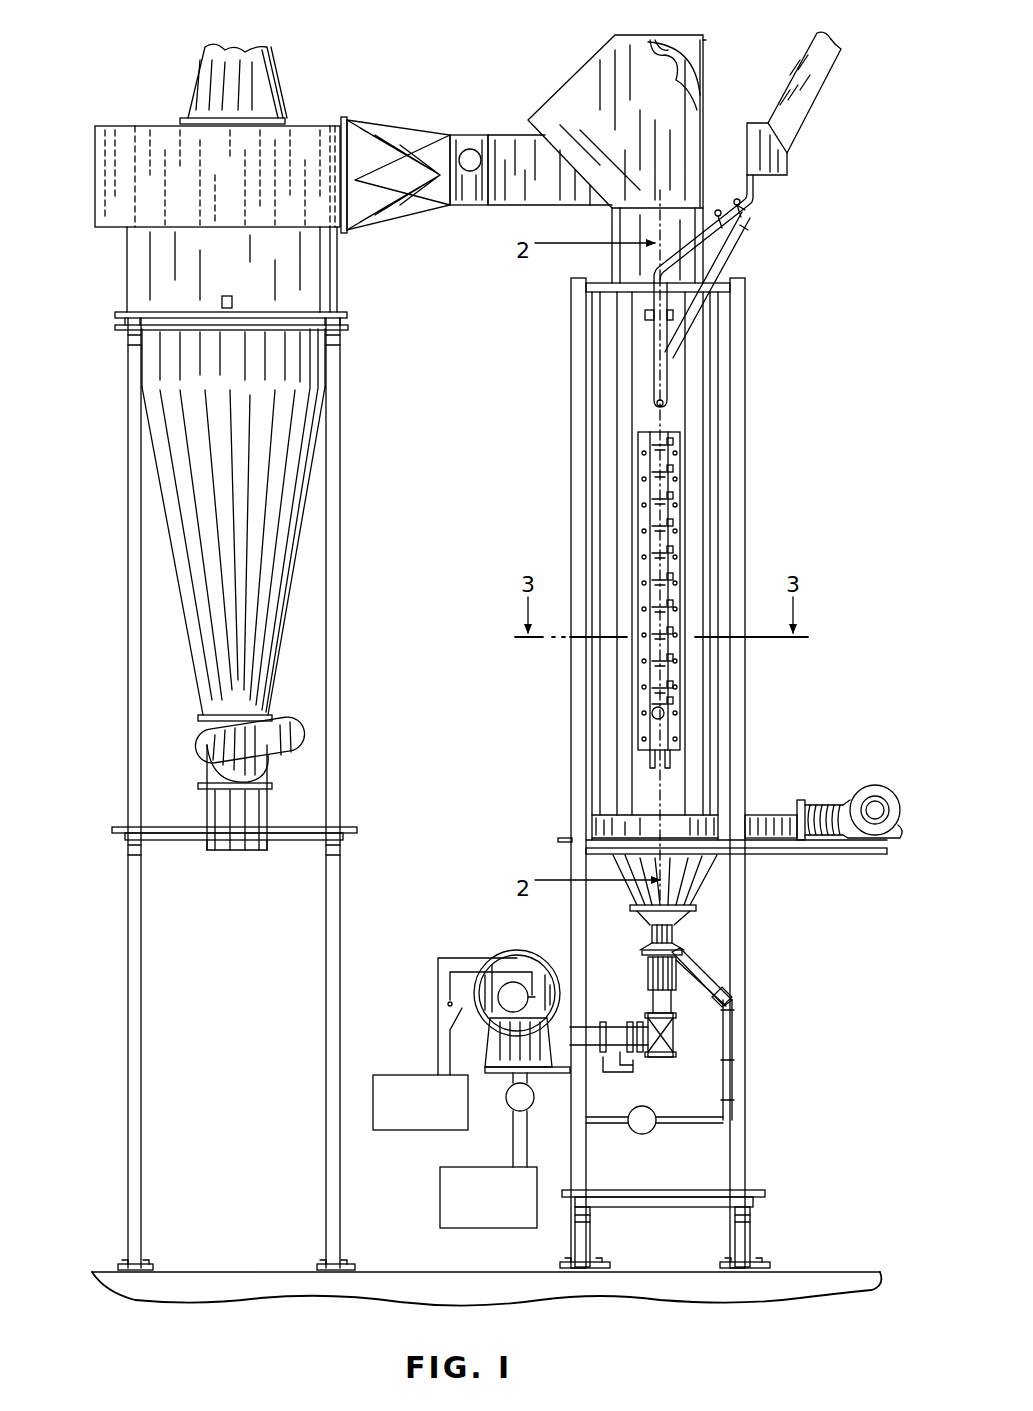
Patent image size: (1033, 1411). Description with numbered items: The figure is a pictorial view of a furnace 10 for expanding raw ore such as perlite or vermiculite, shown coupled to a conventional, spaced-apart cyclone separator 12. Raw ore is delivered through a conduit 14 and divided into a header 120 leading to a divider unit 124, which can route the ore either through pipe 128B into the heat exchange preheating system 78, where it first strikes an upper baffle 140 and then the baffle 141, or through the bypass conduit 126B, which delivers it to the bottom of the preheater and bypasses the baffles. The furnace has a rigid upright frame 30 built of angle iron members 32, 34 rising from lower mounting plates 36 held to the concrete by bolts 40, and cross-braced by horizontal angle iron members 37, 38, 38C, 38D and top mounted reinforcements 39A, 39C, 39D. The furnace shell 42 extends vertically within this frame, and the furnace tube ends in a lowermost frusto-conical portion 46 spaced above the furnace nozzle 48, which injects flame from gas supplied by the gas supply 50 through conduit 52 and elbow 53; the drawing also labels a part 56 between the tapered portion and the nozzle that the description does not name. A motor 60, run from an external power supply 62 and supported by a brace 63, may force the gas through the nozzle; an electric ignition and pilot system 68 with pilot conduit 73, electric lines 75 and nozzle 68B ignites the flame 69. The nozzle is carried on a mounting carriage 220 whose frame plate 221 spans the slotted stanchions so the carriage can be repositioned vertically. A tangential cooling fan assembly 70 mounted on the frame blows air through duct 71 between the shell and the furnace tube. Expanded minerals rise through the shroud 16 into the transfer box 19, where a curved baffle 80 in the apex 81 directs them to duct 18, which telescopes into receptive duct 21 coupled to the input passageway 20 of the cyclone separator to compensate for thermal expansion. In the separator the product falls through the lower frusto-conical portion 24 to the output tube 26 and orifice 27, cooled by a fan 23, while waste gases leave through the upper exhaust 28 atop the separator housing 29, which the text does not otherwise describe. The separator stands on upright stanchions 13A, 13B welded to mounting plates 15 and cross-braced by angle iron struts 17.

The furnace 10 is at (505, 107).
The cyclone separator 12 is at (347, 458).
The stanchion 13A is at (142, 932).
The stanchion 13B is at (341, 942).
The conduit 14 is at (812, 95).
The mounting plates 15 is at (155, 1268).
The shroud 16 is at (612, 223).
The angle iron struts 17 is at (348, 332).
The duct 18 is at (525, 195).
The transfer box 19 is at (560, 82).
The cyclone separator input passageway 20 is at (418, 200).
The receptive duct 21 is at (460, 140).
The fan 23 is at (192, 756).
The lower frusto-conical portion 24 is at (272, 682).
The output tube 26 is at (267, 812).
The orifice 27 is at (215, 855).
The upper exhaust 28 is at (270, 80).
The cyclone top housing 29 is at (137, 138).
The frame 30 is at (727, 1153).
The angle iron member 32 is at (740, 1013).
The angle iron member 34 is at (570, 400).
The lower mounting plates 36 is at (753, 1262).
The horizontal angle iron member 37 is at (623, 1190).
The horizontal angle iron member 38 is at (712, 860).
The horizontal angle iron member 38C is at (753, 855).
The horizontal angle iron member 38D is at (566, 840).
The top mounted reinforcement 39A is at (603, 282).
The top mounted reinforcement 39C is at (570, 285).
The top mounted reinforcement 39D is at (746, 282).
The bolts 40 is at (598, 1262).
The furnace shell 42 is at (703, 428).
The frusto-conical portion 46 is at (642, 888).
The furnace nozzle 48 is at (648, 975).
The gas supply 50 is at (440, 1190).
The conduit 52 is at (648, 1032).
The elbow 53 is at (675, 1030).
The neck 56 is at (652, 936).
The motor 60 is at (514, 950).
The power supply 62 is at (392, 1075).
The brace 63 is at (610, 1072).
The electric ignition and pilot system 68 is at (717, 970).
The nozzle 68B is at (683, 960).
The flame 69 is at (645, 955).
The tangential cooling fan assembly 70 is at (808, 800).
The duct 71 is at (762, 820).
The conduit 73 is at (697, 1117).
The electric lines 75 is at (730, 983).
The preheating system 78 is at (642, 495).
The baffle 80 is at (659, 42).
The apex 81 is at (704, 42).
The header 120 is at (765, 200).
The divider unit 124 is at (745, 225).
The bypass conduit 126B is at (660, 370).
The pipe 128B is at (705, 292).
The upper baffle 140 is at (640, 442).
The baffle 141 is at (674, 468).
The mounting carriage 220 is at (567, 1077).
The frame plate 221 is at (570, 937).